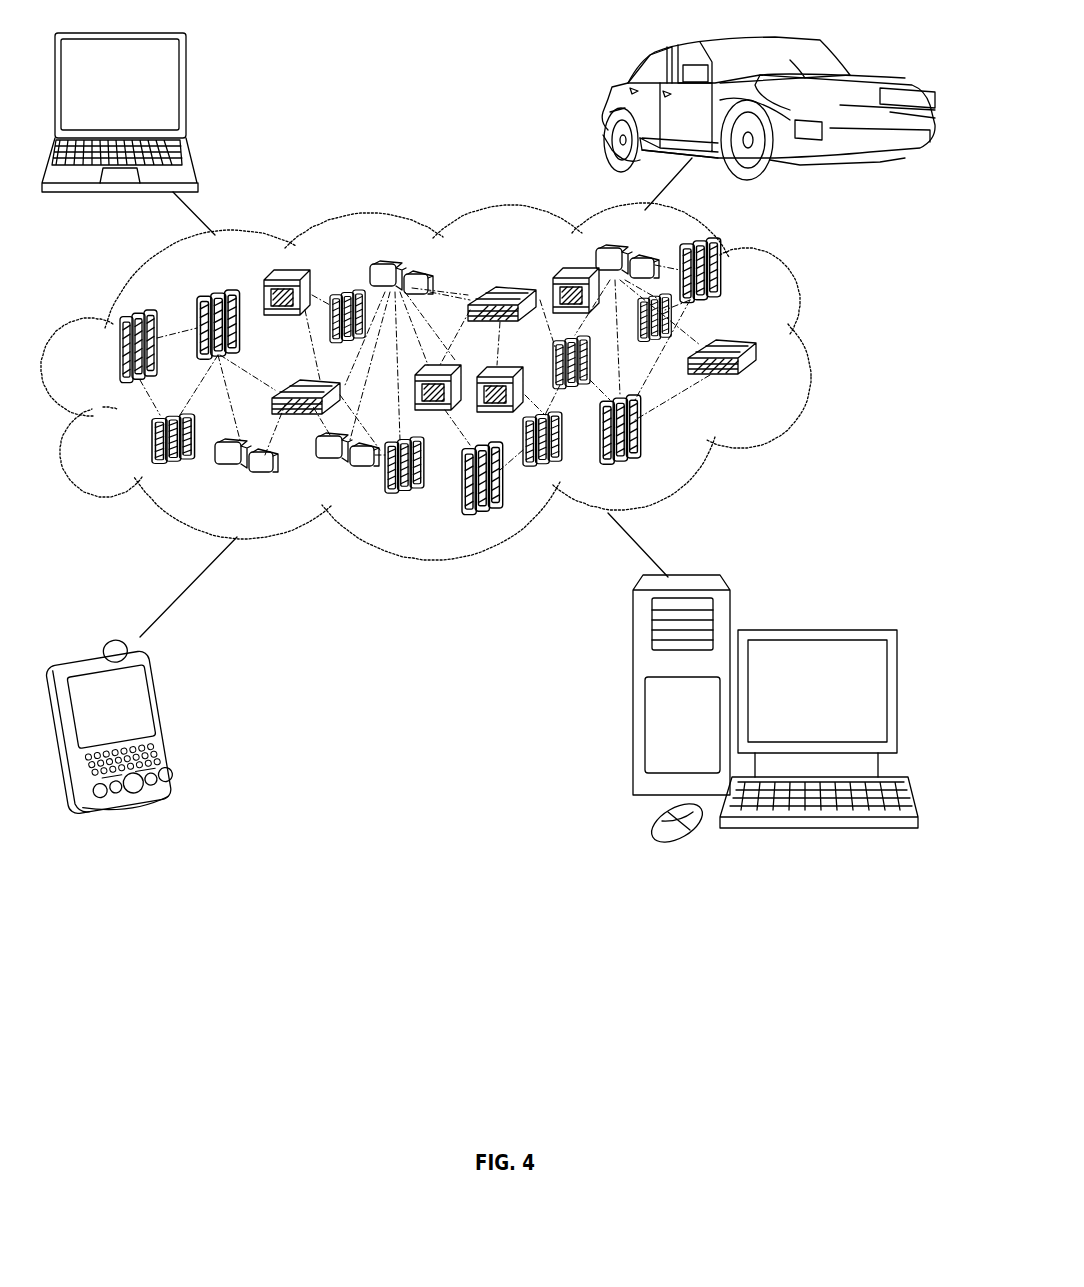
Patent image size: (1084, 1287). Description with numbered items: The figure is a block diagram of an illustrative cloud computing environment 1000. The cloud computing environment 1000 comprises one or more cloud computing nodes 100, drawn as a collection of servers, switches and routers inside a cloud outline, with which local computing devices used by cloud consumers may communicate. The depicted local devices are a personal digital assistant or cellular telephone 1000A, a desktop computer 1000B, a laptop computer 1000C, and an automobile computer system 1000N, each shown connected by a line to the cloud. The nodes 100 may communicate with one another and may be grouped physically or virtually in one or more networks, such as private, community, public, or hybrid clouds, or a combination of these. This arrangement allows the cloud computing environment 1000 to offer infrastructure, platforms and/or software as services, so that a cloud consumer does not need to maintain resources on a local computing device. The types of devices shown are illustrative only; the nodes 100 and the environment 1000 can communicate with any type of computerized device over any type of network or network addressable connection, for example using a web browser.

The laptop computer 1000C is at (187, 93).
The automobile computer system 1000N is at (606, 110).
The cloud computing environment 1000 is at (466, 381).
The cloud computing nodes 100 is at (765, 385).
The personal digital assistant (PDA) or cellular telephone 1000A is at (178, 723).
The desktop computer 1000B is at (813, 628).